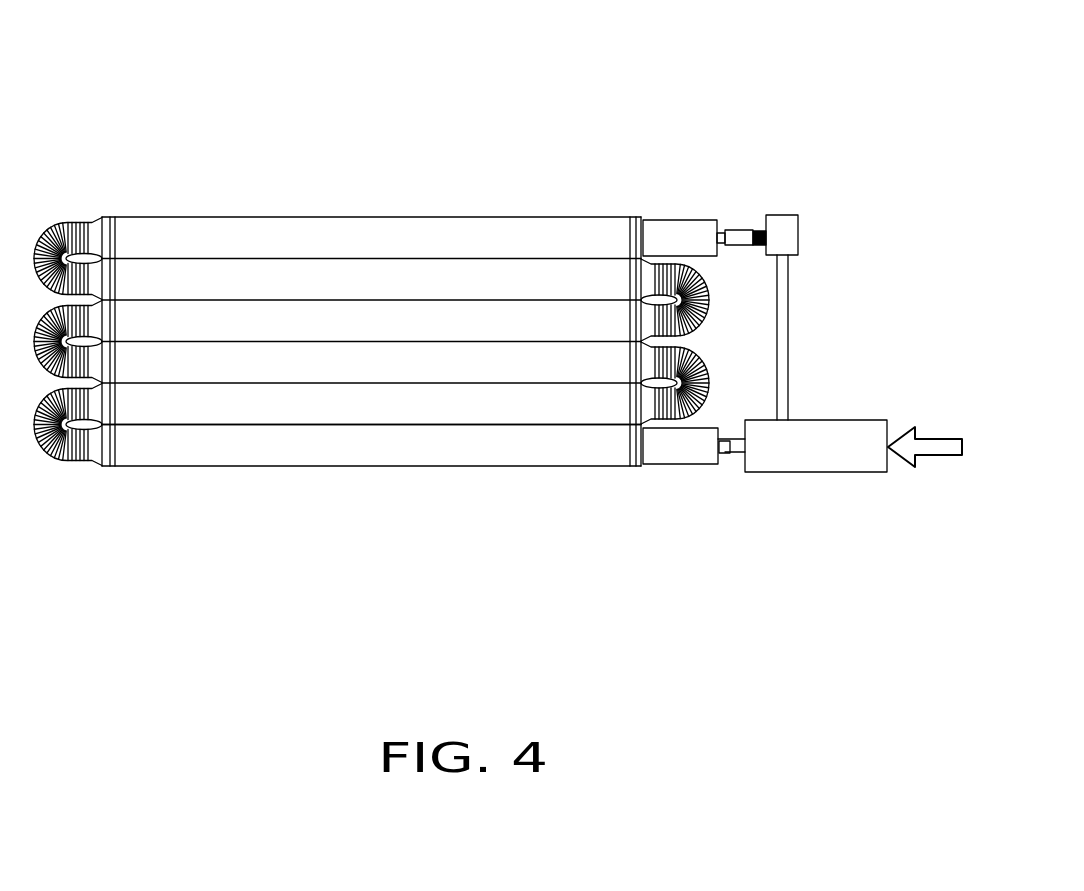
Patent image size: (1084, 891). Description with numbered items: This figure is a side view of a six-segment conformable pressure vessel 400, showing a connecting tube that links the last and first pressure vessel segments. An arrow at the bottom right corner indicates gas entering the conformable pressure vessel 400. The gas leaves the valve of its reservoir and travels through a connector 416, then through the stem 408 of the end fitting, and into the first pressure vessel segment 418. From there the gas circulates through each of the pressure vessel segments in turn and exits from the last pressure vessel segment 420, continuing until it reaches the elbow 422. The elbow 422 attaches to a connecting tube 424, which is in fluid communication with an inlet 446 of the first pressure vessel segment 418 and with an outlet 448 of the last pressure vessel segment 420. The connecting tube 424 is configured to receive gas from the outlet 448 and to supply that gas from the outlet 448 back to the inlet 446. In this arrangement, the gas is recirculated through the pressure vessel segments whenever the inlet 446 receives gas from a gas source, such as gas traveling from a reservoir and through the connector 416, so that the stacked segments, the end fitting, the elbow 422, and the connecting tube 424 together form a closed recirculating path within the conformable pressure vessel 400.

The conformable pressure vessel 400 is at (498, 324).
The last pressure vessel segment 420 is at (399, 233).
The first pressure vessel segment 418 is at (276, 457).
The outlet 448 is at (672, 237).
The inlet 446 is at (678, 445).
The stem 408 is at (727, 453).
The elbow 422 is at (783, 235).
The connecting tube 424 is at (783, 325).
The connector 416 is at (785, 460).